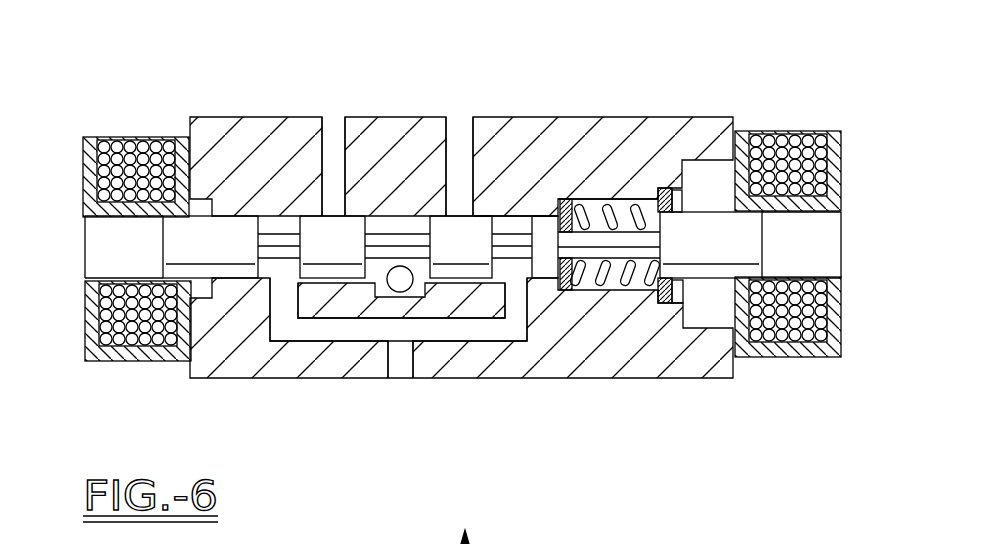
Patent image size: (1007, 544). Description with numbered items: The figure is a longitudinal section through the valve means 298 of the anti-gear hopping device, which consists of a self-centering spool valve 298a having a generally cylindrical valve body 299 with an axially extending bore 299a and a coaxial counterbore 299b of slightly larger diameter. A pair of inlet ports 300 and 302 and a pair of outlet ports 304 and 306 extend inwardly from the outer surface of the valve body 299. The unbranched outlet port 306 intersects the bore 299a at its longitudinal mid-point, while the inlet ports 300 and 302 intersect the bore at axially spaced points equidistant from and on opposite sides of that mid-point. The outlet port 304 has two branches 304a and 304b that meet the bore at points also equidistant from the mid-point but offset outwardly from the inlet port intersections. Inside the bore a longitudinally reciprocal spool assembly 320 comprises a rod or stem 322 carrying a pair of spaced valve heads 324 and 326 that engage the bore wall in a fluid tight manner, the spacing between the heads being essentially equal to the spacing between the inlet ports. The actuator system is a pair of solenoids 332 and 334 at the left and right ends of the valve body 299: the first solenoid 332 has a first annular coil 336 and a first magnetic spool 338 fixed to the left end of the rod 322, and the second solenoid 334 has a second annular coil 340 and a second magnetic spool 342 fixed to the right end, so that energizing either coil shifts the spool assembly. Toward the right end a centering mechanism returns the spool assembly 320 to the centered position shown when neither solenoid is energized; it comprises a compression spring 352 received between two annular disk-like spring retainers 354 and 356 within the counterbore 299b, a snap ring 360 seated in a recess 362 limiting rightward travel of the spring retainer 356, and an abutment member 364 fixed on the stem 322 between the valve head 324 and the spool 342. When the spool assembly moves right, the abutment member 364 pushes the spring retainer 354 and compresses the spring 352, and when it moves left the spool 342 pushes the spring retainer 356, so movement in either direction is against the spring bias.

The valve means 298 is at (277, 90).
The self-centering spool valve 298a is at (250, 112).
The valve body 299 is at (215, 378).
The bore 299a is at (503, 213).
The counterbore 299b is at (588, 200).
The inlet port 300 is at (453, 117).
The inlet port 302 is at (333, 117).
The outlet port 304 is at (403, 366).
The outlet port branch 304a is at (486, 339).
The outlet port branch 304b is at (343, 339).
The outlet port 306 is at (401, 284).
The spool assembly 320 is at (158, 240).
The rod or stem 322 is at (386, 233).
The valve head 324 is at (479, 256).
The valve head 326 is at (352, 256).
The first solenoid 332 is at (115, 132).
The second solenoid 334 is at (806, 126).
The first annular coil 336 is at (125, 358).
The first magnetic spool 338 is at (230, 256).
The second annular coil 340 is at (810, 350).
The second magnetic spool 342 is at (722, 256).
The compression spring 352 is at (612, 198).
The spring retainer 354 is at (567, 292).
The spring retainer 356 is at (660, 300).
The snap ring 360 is at (663, 303).
The recess 362 is at (675, 303).
The abutment member 364 is at (552, 281).